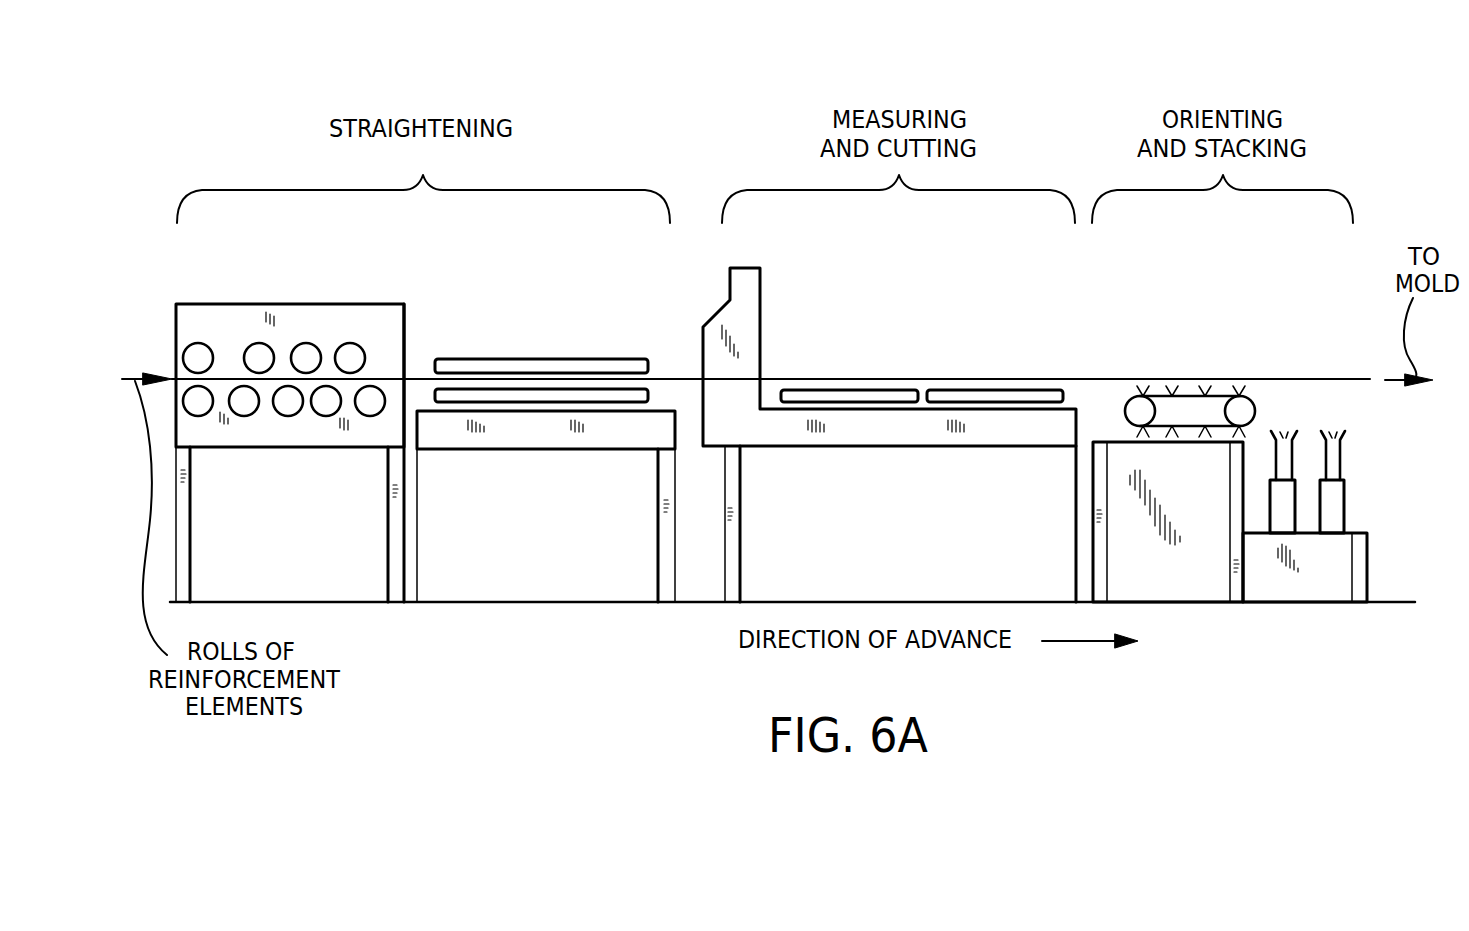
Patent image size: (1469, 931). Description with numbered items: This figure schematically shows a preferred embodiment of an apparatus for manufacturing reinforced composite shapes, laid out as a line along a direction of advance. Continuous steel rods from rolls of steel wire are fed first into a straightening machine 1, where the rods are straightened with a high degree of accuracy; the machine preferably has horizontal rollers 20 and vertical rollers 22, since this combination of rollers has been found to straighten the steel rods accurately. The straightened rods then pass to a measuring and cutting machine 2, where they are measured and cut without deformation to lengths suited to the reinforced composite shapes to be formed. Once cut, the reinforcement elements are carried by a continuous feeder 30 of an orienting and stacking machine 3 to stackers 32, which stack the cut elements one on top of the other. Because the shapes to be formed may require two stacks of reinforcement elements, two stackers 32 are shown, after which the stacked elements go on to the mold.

The horizontal rollers 20 is at (213, 355).
The straightening machine 1 is at (546, 419).
The vertical rollers 22 is at (600, 357).
The measuring and cutting machine 2 is at (925, 308).
The orienting and stacking machine 3 is at (1230, 409).
The continuous feeder 30 is at (1168, 378).
The stackers 32 is at (1299, 423).